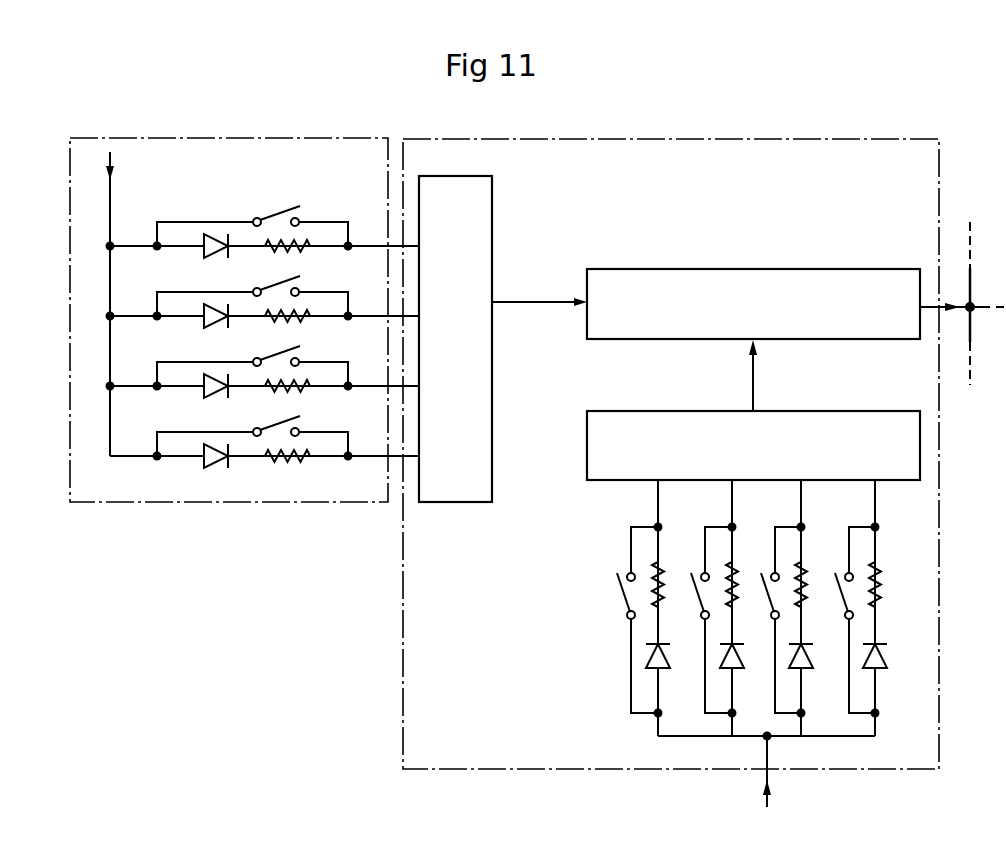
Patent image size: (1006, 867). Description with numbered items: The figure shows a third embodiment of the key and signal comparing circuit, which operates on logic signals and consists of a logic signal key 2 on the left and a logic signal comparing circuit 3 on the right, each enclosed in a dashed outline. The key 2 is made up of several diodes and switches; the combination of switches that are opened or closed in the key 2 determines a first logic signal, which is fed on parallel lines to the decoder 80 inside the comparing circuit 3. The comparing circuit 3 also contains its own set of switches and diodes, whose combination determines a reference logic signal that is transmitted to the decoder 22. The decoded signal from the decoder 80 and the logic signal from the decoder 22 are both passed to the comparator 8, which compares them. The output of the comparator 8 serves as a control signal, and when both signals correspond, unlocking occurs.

The logic signal key 2 is at (297, 138).
The logic signal comparing circuit 3 is at (700, 139).
The decoder 80 is at (492, 218).
The comparator 8 is at (826, 268).
The decoder 22 is at (833, 410).